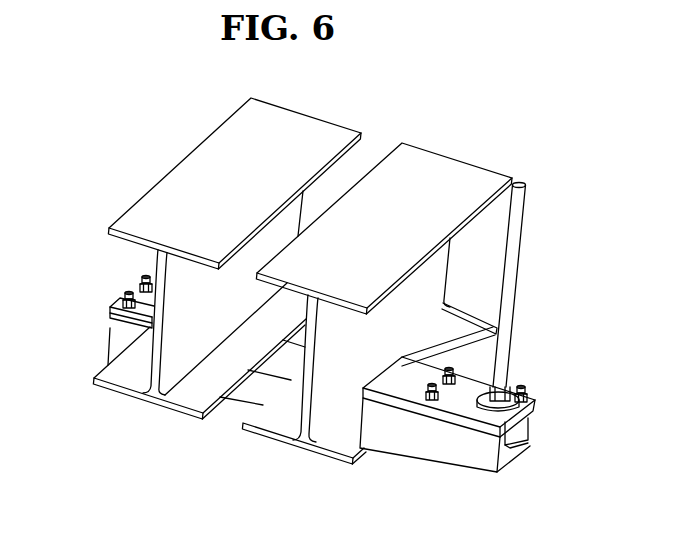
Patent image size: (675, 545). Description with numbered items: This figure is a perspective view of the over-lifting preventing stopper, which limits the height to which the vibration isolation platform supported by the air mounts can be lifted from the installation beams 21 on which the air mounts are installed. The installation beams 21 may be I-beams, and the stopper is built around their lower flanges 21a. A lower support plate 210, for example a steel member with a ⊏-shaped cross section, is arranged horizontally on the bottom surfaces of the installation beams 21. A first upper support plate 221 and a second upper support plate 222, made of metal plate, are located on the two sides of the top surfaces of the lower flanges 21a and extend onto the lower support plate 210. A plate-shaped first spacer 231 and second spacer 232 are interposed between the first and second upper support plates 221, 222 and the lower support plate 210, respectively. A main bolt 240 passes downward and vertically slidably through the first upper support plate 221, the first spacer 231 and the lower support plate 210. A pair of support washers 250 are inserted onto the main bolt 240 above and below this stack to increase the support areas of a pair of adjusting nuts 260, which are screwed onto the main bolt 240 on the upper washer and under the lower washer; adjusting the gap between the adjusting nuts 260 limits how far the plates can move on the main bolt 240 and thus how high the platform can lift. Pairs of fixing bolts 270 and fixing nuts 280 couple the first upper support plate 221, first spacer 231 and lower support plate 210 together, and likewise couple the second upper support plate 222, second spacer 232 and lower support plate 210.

The installation beam 21 is at (180, 183).
The lower flange 21a is at (112, 388).
The lower support plate 210 is at (477, 458).
The first upper support plate 221 is at (468, 385).
The second upper support plate 222 is at (105, 330).
The first spacer 231 is at (508, 440).
The second spacer 232 is at (125, 325).
The main bolt 240 is at (518, 232).
The support washer 250 is at (527, 417).
The adjusting nut 260 is at (527, 400).
The fixing bolt 270 is at (127, 290).
The fixing nut 280 is at (122, 302).